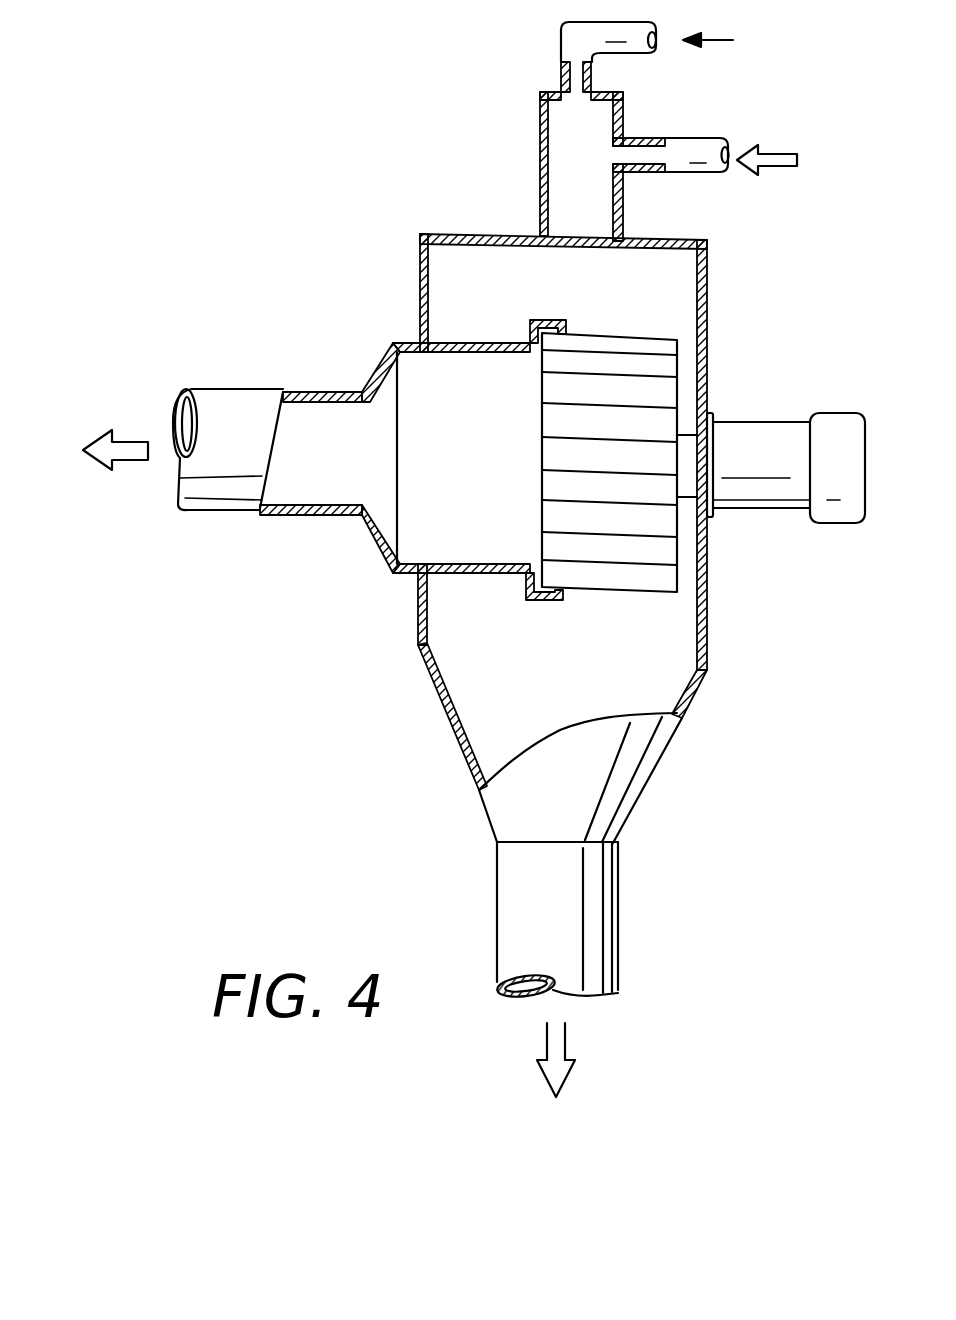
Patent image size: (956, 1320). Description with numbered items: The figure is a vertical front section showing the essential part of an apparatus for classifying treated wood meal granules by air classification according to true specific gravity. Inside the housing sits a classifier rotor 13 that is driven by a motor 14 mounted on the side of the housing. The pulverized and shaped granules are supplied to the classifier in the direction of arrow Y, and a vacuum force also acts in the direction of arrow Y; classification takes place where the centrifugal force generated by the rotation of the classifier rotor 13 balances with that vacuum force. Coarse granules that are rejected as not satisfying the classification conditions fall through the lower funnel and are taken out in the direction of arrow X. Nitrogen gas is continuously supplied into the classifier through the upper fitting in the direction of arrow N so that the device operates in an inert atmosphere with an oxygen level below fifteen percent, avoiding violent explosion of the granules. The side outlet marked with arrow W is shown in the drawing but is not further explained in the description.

The classifier rotor 13 is at (603, 600).
The motor 14 is at (770, 420).
The flow direction W arrow W is at (97, 450).
The arrow N is at (727, 41).
The arrow Y is at (781, 160).
The arrow X is at (556, 1079).